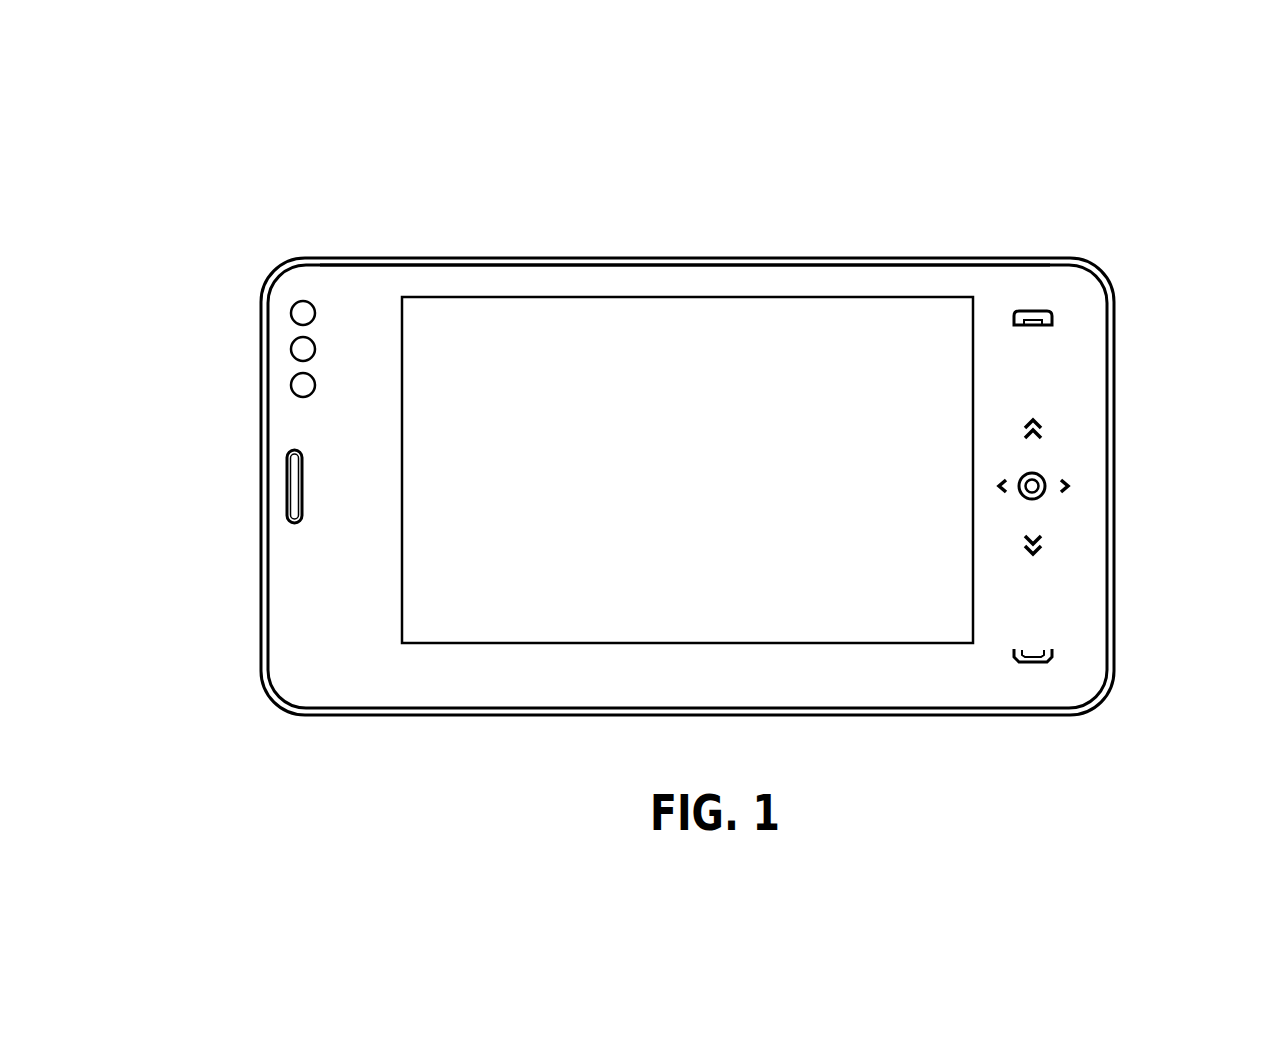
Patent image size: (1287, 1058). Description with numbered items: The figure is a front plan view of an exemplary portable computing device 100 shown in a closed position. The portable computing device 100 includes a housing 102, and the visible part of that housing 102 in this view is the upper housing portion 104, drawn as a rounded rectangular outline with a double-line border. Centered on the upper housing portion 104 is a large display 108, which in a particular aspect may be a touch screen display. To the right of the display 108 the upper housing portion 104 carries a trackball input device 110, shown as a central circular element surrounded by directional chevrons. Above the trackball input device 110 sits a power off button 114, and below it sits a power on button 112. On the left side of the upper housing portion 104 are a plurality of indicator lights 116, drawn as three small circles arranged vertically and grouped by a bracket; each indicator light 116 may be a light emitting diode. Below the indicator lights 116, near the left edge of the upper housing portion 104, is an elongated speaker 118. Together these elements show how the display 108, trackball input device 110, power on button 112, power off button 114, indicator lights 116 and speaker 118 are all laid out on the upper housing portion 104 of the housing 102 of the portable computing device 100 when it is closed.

The portable computing device 100 is at (1169, 186).
The housing 102 is at (300, 258).
The upper housing portion 104 is at (675, 272).
The display 108 is at (690, 620).
The trackball input device 110 is at (1045, 492).
The power on button 112 is at (1053, 657).
The power off button 114 is at (1053, 311).
The indicator lights 116 is at (293, 293).
The speaker 118 is at (292, 490).